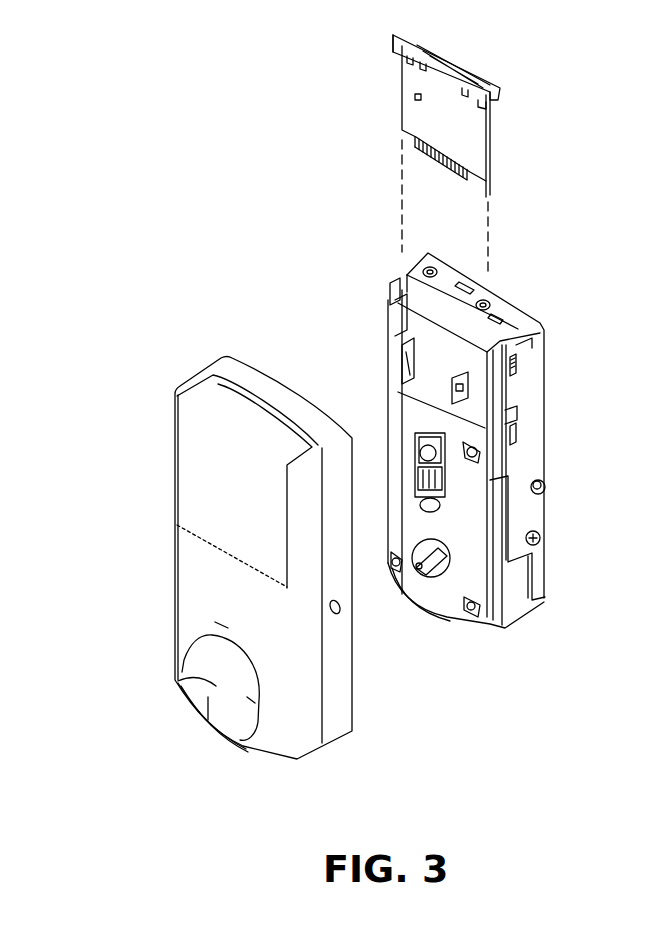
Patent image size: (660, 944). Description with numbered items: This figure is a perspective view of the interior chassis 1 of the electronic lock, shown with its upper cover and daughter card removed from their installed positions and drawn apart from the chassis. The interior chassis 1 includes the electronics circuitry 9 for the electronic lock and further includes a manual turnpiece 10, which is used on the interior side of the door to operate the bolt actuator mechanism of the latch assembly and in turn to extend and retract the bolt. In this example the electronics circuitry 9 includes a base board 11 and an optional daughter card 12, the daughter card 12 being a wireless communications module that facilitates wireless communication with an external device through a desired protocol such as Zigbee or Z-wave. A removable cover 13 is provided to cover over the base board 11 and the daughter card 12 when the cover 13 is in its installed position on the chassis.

The interior chassis 1 is at (558, 671).
The electronics circuitry 9 is at (338, 314).
The manual turnpiece 10 is at (176, 683).
The base board 11 is at (549, 434).
The daughter card 12 is at (497, 117).
The removable cover 13 is at (168, 470).